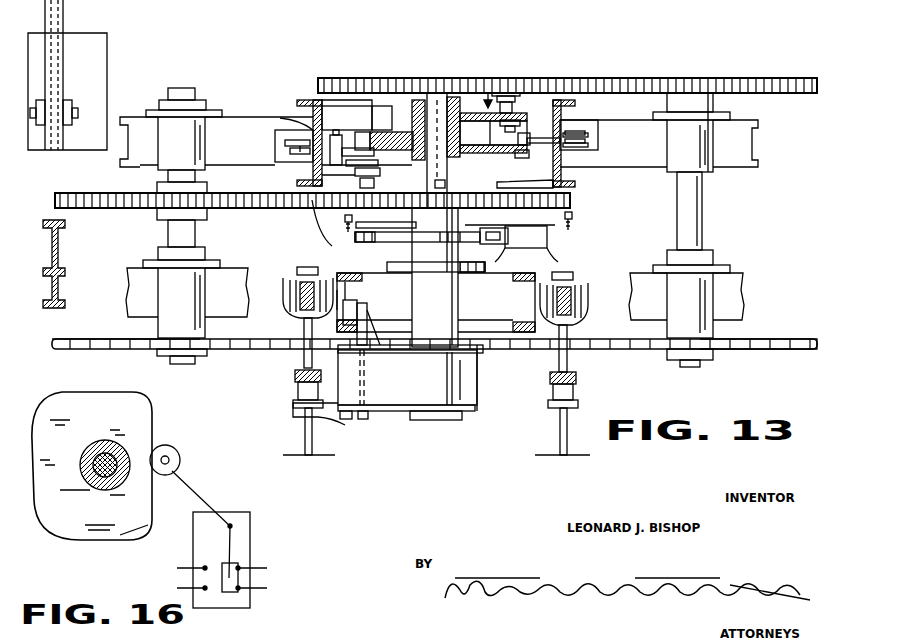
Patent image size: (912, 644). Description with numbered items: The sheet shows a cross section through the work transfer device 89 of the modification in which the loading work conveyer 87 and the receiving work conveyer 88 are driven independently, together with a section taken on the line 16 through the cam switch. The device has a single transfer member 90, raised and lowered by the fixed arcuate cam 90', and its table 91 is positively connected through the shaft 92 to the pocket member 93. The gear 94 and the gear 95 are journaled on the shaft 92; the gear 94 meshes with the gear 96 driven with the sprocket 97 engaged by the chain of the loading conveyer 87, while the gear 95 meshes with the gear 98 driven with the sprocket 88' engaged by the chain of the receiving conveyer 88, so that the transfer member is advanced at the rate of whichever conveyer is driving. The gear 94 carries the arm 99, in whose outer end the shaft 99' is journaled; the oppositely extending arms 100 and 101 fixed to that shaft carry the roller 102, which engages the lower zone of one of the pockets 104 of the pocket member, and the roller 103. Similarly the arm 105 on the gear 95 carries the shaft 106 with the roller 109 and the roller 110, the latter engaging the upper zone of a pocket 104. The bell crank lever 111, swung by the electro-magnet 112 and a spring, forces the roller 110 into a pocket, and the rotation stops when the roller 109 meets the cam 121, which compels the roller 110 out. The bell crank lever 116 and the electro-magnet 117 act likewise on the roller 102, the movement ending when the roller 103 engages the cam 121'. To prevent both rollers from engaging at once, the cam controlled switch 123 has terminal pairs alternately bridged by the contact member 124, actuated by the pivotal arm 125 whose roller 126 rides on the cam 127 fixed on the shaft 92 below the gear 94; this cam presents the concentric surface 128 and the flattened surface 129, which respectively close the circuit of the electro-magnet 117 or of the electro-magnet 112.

In FIG. 13, the section line 16 is at (345, 217).
In FIG. 13, the loading work conveyer 87 is at (86, 357).
In FIG. 13, the receiving work conveyer 88 is at (434, 366).
In FIG. 13, the sprocket 88' is at (758, 329).
In FIG. 13, the work transfer device 89 is at (484, 78).
In FIG. 13, the transfer member 90 is at (388, 397).
In FIG. 13, the arcuate cam 90' is at (329, 314).
In FIG. 13, the table 91 is at (478, 412).
In FIG. 13, the shaft 92 is at (440, 100).
In FIG. 16, the shaft 92 is at (125, 455).
In FIG. 13, the pocket member 93 is at (388, 132).
In FIG. 13, the gear 94 is at (380, 242).
In FIG. 13, the gear 95 is at (410, 78).
In FIG. 13, the gear 96 is at (240, 208).
In FIG. 13, the sprocket 97 is at (133, 350).
In FIG. 13, the gear 98 is at (645, 78).
In FIG. 13, the arm 99 is at (386, 217).
In FIG. 13, the shaft 99' is at (381, 178).
In FIG. 13, the arm 100 is at (338, 165).
In FIG. 13, the arm 101 is at (358, 168).
In FIG. 13, the roller 102 is at (335, 135).
In FIG. 13, the roller 103 is at (318, 212).
In FIG. 13, the pocket 104 is at (378, 110).
In FIG. 13, the arm 105 is at (492, 113).
In FIG. 13, the shaft 106 is at (562, 78).
In FIG. 13, the roller 109 is at (507, 96).
In FIG. 13, the roller 110 is at (515, 130).
In FIG. 13, the bell crank lever 111 is at (570, 85).
In FIG. 13, the electro-magnet 112 is at (598, 145).
In FIG. 16, the electro-magnet 112 is at (266, 578).
In FIG. 13, the bell crank lever 116 is at (297, 112).
In FIG. 13, the electro-magnet 117 is at (282, 166).
In FIG. 16, the electro-magnet 117 is at (177, 578).
In FIG. 13, the cam 121 is at (325, 120).
In FIG. 13, the cam 121' is at (560, 145).
In FIG. 13, the cam controlled switch 123 is at (577, 246).
In FIG. 16, the cam controlled switch 123 is at (257, 522).
In FIG. 16, the contact member 124 is at (238, 570).
In FIG. 13, the pivotal arm 125 is at (368, 354).
In FIG. 16, the pivotal arm 125 is at (208, 504).
In FIG. 13, the roller 126 is at (505, 226).
In FIG. 16, the roller 126 is at (181, 453).
In FIG. 13, the cam 127 is at (425, 242).
In FIG. 16, the cam 127 is at (92, 535).
In FIG. 13, the cam surface 128 is at (472, 274).
In FIG. 16, the cam surface 128 is at (128, 535).
In FIG. 13, the flattened surface 129 is at (500, 246).
In FIG. 16, the flattened surface 129 is at (152, 498).